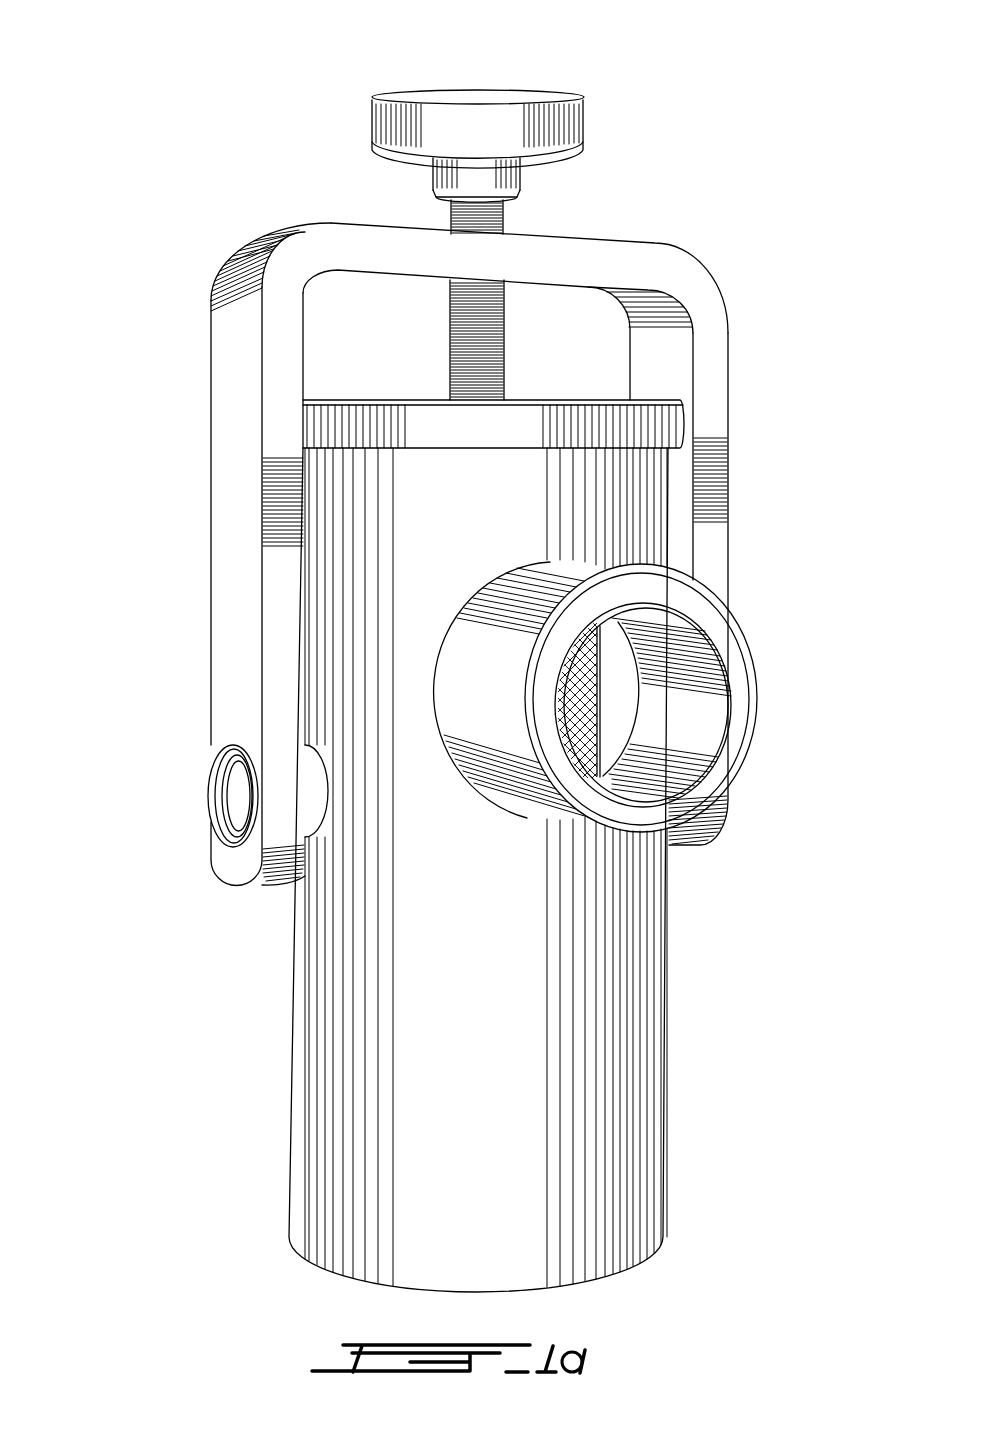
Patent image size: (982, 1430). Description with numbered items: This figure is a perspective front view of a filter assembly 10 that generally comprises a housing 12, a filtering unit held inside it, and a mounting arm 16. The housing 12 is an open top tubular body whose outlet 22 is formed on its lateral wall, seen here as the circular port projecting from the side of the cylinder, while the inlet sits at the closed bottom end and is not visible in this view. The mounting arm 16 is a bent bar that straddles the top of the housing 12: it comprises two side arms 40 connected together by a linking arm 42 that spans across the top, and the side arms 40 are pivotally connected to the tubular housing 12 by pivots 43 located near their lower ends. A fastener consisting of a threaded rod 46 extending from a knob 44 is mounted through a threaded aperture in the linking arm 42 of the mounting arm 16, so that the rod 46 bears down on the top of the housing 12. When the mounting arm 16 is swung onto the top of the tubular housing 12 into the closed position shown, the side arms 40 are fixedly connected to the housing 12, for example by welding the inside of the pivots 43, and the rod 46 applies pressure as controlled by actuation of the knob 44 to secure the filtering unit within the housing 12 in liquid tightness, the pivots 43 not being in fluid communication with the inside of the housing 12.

The filter assembly 10 is at (155, 330).
The housing 12 is at (290, 1092).
The mounting arm 16 is at (288, 234).
The outlet 22 is at (675, 722).
The side arms 40 is at (728, 428).
The linking arm 42 is at (660, 242).
The pivots 43 is at (255, 797).
The knob 44 is at (475, 90).
The threaded rod 46 is at (507, 222).